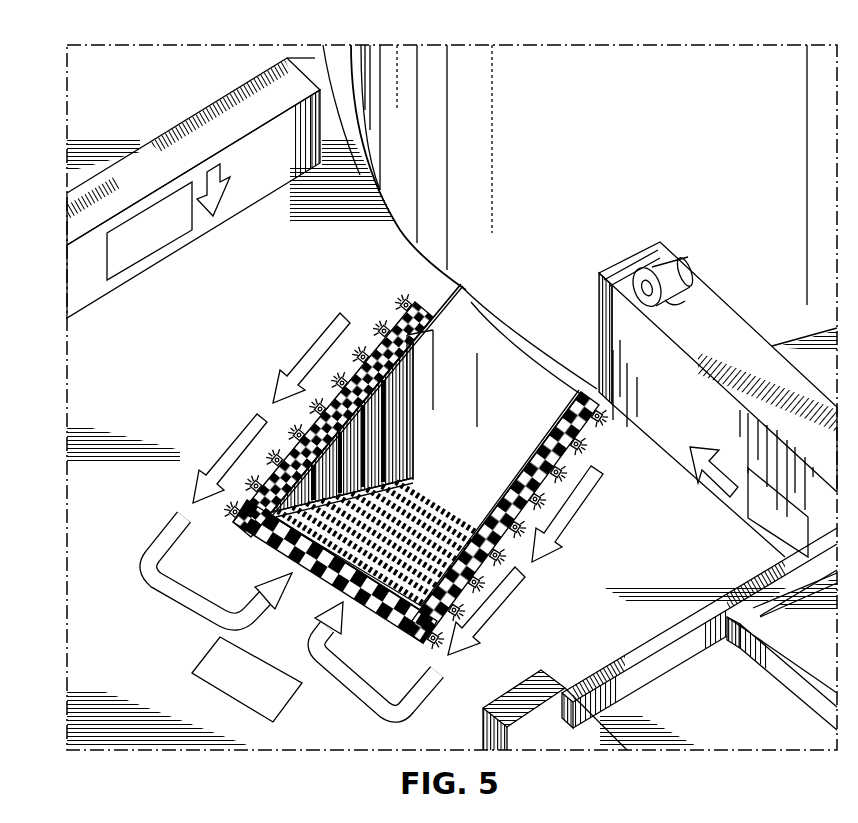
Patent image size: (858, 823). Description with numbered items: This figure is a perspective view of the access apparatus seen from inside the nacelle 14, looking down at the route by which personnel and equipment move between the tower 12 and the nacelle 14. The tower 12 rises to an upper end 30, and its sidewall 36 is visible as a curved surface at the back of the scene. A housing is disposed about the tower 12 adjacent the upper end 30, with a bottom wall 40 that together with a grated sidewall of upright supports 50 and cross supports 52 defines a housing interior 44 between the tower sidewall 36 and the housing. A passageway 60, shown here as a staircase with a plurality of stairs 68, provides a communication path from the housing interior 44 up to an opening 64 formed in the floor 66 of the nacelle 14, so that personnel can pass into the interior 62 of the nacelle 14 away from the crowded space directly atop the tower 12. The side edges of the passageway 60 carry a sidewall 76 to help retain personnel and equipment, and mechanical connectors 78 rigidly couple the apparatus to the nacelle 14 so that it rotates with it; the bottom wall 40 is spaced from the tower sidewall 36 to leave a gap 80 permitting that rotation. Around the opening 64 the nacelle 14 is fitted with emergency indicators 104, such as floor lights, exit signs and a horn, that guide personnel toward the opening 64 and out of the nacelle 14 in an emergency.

The tower 12 is at (346, 58).
The nacelle 14 is at (62, 498).
The upper end 30 is at (345, 82).
The sidewall 36 is at (509, 389).
The bottom wall 40 is at (508, 478).
The housing interior 44 is at (528, 357).
The upright supports 50 is at (416, 417).
The cross supports 52 is at (415, 385).
The passageway 60 is at (470, 448).
The interior of the nacelle 62 is at (131, 404).
The opening 64 is at (466, 305).
The floor 66 is at (182, 640).
The stairs 68 is at (430, 490).
The sidewall 76 is at (405, 463).
The mechanical connectors 78 is at (415, 360).
The gap 80 is at (505, 462).
The emergency indicators 104 is at (129, 268).